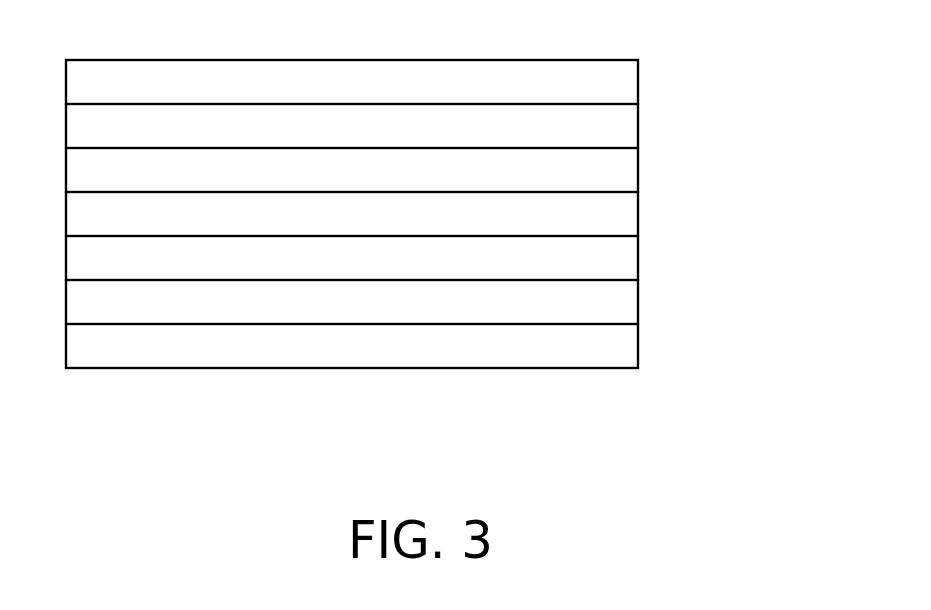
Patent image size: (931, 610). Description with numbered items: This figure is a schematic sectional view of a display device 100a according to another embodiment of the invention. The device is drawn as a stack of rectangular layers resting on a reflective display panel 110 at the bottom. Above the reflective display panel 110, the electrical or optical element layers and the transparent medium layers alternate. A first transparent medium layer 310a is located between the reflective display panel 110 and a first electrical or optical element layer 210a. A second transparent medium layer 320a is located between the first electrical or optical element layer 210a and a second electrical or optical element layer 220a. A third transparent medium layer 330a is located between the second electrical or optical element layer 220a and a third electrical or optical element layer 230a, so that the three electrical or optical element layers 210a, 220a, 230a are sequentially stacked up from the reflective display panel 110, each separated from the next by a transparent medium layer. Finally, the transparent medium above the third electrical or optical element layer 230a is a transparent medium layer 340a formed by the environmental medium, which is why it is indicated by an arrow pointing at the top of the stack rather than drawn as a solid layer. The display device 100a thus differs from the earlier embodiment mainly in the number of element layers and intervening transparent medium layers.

The display device 100a is at (833, 420).
The reflective display panel 110 is at (630, 344).
The first transparent medium layer 310a is at (630, 300).
The first electrical or optical element layer 210a is at (630, 257).
The second transparent medium layer 320a is at (630, 213).
The second electrical or optical element layer 220a is at (630, 168).
The third transparent medium layer 330a is at (630, 125).
The third electrical or optical element layer 230a is at (630, 80).
The transparent medium layer formed by the environmental medium 340a is at (615, 35).